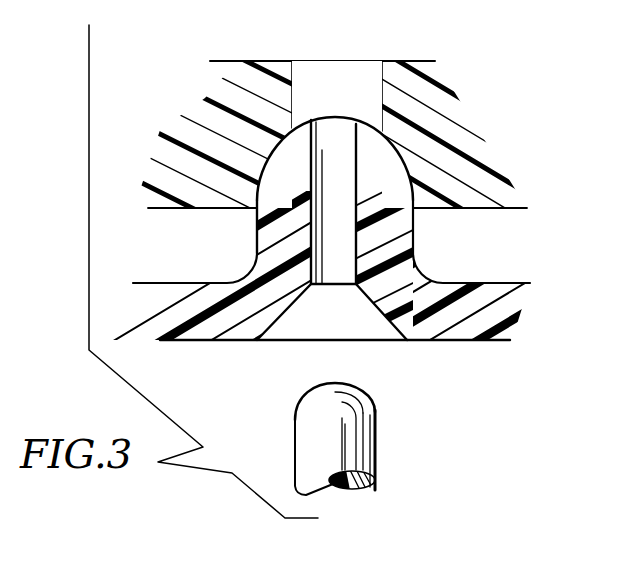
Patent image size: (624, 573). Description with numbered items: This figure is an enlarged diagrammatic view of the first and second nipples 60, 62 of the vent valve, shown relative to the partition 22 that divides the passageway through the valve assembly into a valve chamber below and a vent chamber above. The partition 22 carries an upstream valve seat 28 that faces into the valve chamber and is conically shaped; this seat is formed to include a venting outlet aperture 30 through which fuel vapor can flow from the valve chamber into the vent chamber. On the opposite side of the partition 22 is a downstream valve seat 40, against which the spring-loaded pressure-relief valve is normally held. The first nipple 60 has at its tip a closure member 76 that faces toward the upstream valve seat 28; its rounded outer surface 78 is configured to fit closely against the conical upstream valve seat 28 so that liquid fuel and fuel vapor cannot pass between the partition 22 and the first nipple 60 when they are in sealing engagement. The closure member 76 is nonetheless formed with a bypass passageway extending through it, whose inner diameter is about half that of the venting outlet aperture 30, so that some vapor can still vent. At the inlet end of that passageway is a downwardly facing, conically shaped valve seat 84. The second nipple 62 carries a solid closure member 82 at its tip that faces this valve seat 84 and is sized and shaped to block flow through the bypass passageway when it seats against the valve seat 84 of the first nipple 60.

The partition 22 is at (350, 173).
The downstream valve seat 40 is at (268, 61).
The venting outlet aperture 30 is at (380, 63).
The upstream valve seat 28 is at (233, 206).
The first nipple 60 is at (320, 262).
The closure member 76 is at (268, 245).
The rounded outer surface 78 is at (405, 124).
The valve seat 84 is at (386, 319).
The second nipple 62 is at (357, 430).
The solid closure member 82 is at (320, 405).